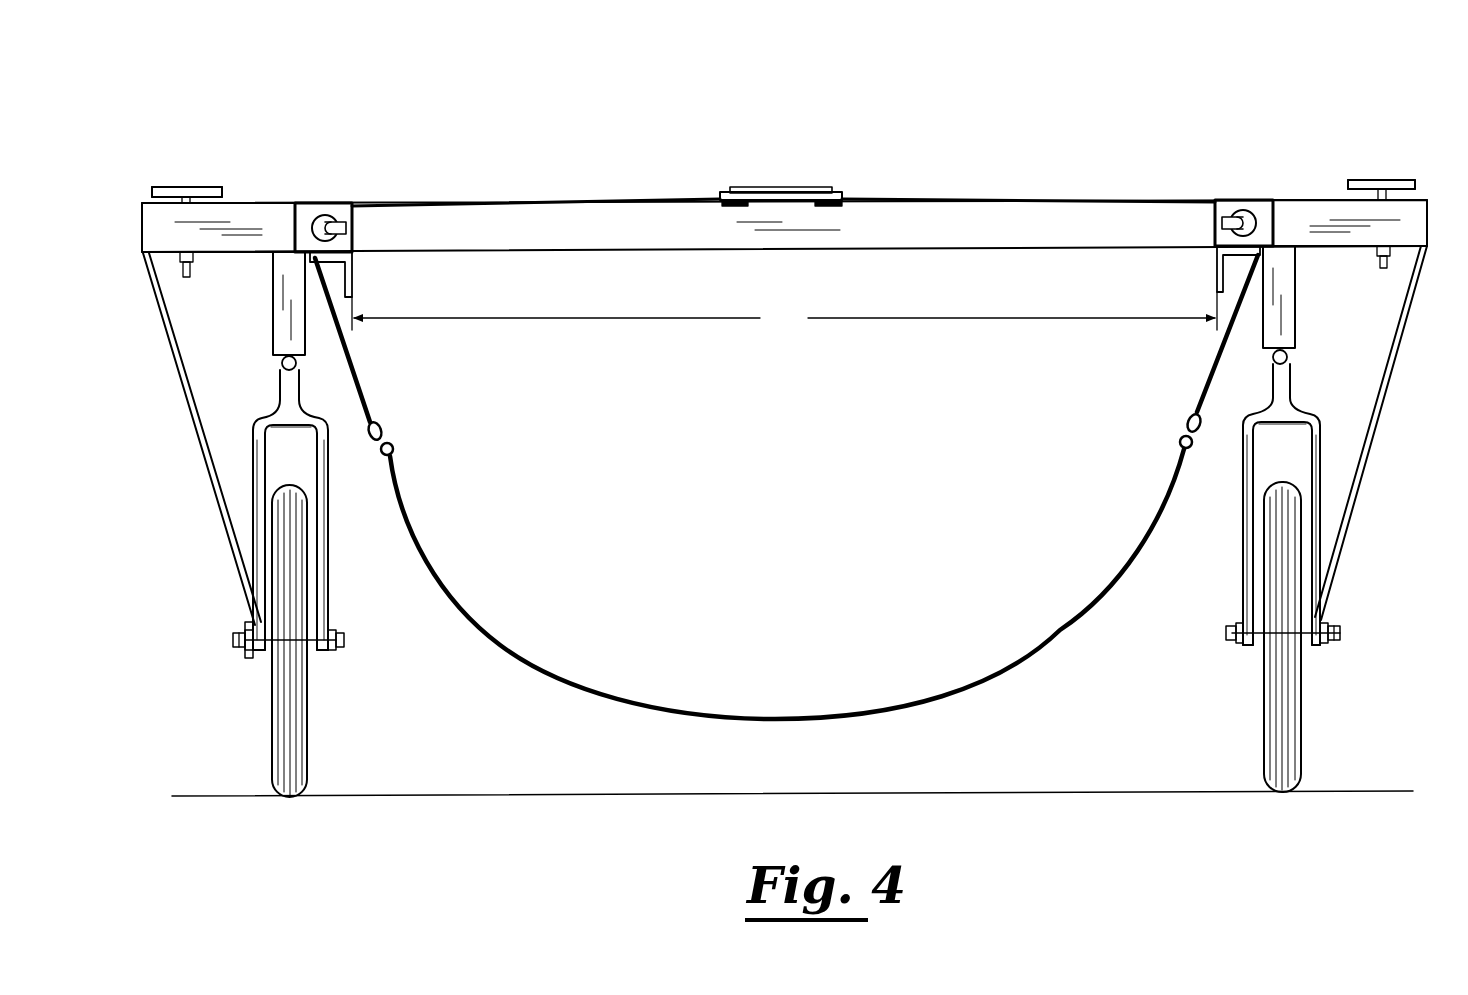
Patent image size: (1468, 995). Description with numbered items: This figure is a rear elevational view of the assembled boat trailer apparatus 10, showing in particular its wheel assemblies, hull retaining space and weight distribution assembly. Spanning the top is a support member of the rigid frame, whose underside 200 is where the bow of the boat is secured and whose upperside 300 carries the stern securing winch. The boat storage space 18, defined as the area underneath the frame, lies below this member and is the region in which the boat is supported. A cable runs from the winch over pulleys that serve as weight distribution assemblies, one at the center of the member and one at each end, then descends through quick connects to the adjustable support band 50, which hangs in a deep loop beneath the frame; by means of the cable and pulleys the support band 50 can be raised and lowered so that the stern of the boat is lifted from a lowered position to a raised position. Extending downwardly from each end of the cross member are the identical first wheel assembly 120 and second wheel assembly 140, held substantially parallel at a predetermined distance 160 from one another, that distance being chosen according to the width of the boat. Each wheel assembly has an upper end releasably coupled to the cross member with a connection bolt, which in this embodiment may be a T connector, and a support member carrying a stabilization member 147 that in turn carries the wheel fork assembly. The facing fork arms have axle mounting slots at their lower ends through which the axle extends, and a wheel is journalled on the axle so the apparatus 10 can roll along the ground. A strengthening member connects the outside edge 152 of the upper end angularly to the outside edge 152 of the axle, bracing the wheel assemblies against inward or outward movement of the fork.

The boat trailer apparatus 10 is at (540, 137).
The boat storage space 18 is at (700, 580).
The adjustable support band 50 is at (812, 703).
The first wheel assembly 120 is at (165, 187).
The second wheel assembly 140 is at (1417, 180).
The stabilization member 147 is at (1288, 358).
The outside edge 152 is at (236, 632).
The predetermined distance 160 is at (784, 311).
The underside 200 is at (738, 258).
The upperside 300 is at (950, 153).